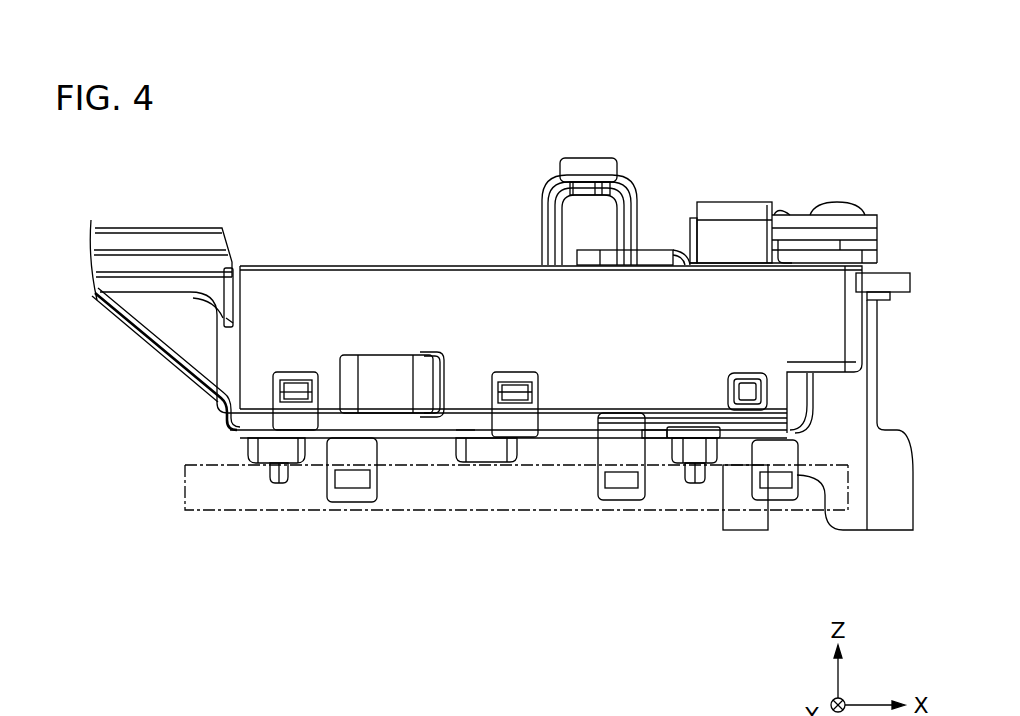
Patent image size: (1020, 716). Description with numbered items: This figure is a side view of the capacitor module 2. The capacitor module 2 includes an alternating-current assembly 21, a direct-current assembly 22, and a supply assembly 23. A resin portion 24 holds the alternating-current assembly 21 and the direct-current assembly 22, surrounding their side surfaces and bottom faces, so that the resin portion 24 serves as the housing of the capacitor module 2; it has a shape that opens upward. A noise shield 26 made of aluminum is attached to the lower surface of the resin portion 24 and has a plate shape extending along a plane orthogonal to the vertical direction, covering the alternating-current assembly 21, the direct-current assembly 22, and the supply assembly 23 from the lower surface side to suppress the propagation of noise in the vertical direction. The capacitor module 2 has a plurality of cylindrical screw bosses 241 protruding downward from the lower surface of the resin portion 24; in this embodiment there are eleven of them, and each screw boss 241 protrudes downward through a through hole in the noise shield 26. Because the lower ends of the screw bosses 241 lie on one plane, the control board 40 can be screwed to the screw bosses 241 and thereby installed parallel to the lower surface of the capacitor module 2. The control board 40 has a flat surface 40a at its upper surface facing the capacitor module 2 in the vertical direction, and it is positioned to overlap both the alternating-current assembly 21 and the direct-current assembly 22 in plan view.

The capacitor module 2 is at (829, 100).
The alternating-current assembly 21 is at (398, 260).
The direct-current assembly 22 is at (759, 186).
The supply assembly 23 is at (604, 148).
The resin portion 24 is at (450, 393).
The screw boss 241 is at (265, 455).
The noise shield 26 is at (173, 352).
The control board 40 is at (388, 510).
The flat surface 40a is at (206, 465).